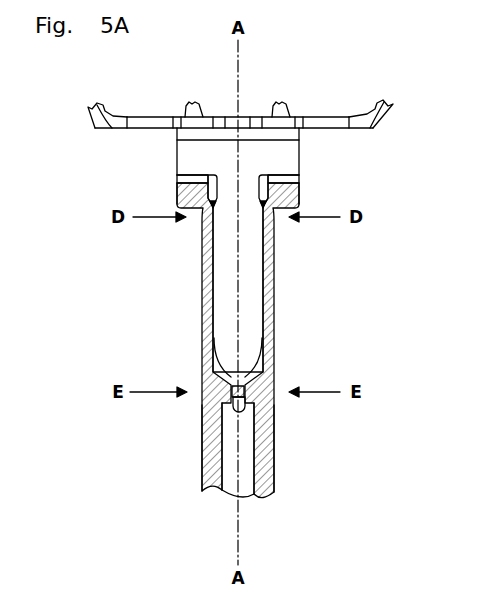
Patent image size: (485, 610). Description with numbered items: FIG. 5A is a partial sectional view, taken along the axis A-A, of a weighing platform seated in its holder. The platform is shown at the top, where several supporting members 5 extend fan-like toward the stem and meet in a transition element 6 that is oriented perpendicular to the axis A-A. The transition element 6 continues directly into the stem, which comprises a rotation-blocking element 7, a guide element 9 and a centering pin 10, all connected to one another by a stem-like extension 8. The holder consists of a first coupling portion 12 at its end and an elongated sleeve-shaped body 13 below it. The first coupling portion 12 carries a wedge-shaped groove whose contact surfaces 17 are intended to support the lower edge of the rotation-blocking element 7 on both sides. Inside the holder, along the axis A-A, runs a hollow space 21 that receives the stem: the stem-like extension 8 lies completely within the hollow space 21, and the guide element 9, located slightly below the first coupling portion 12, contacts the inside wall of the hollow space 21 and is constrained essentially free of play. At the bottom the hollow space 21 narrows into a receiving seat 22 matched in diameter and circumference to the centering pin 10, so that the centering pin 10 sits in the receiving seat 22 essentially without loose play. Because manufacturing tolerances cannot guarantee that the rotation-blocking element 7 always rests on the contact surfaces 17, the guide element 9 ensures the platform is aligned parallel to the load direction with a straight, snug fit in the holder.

The supporting member 5 is at (377, 112).
The transition element 6 is at (322, 122).
The rotation-blocking element 7 is at (268, 157).
The stem-like extension 8 is at (245, 290).
The guide element 9 is at (230, 213).
The centering pin 10 is at (232, 401).
The first coupling portion 12 is at (196, 198).
The elongated sleeve-shaped body 13 is at (263, 435).
The contact surfaces 17 is at (190, 186).
The hollow space 21 is at (217, 365).
The receiving seat 22 is at (243, 387).